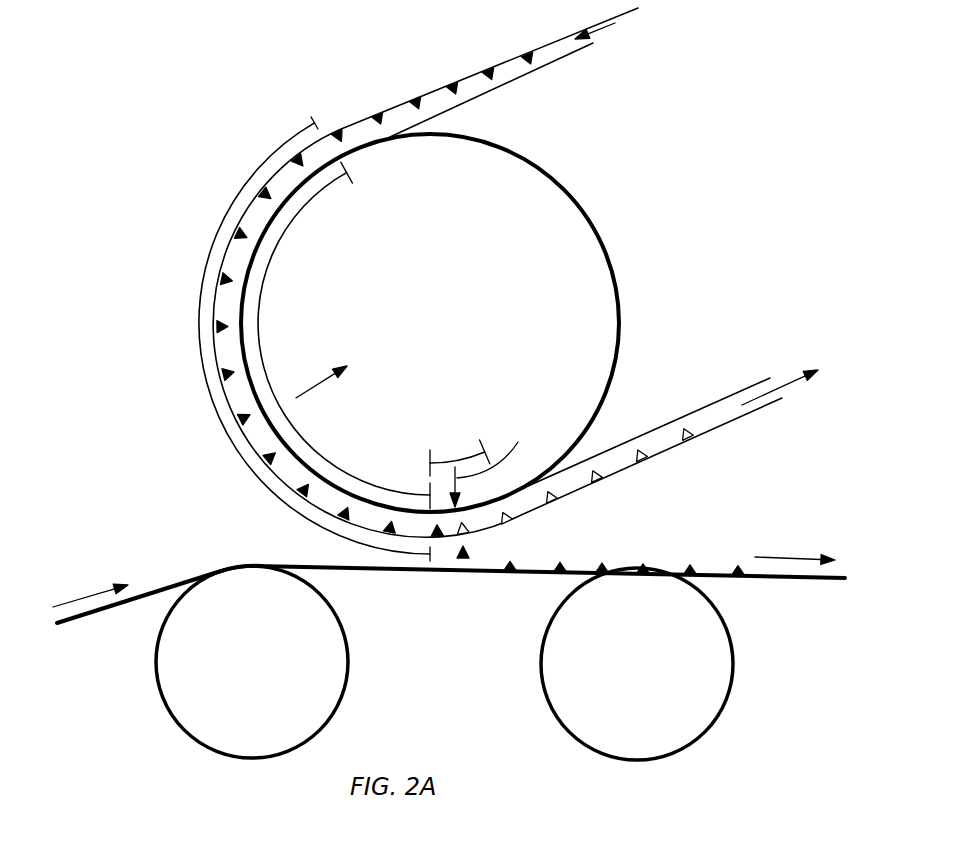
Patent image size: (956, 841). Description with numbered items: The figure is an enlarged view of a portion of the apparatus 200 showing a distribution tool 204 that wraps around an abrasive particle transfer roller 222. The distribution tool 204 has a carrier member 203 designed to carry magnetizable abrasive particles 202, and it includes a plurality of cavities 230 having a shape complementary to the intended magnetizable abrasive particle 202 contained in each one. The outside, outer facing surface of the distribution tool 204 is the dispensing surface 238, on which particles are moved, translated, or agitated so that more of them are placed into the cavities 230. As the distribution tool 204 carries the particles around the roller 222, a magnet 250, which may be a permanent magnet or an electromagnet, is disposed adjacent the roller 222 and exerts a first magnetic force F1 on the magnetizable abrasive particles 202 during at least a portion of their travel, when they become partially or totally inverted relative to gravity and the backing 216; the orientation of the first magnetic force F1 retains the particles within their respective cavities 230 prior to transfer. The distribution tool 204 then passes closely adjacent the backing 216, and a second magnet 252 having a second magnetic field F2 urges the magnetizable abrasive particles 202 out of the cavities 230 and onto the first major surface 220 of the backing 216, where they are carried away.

The apparatus 200 is at (178, 93).
The magnetizable abrasive particle 202 is at (688, 566).
The carrier member 203 is at (510, 68).
The distribution tool 204 is at (211, 248).
The backing 216 is at (167, 585).
The first major surface 220 is at (537, 564).
The abrasive particle transfer roller 222 is at (610, 256).
The cavities 230 is at (690, 437).
The dispensing surface 238 is at (393, 106).
The magnet 250 is at (262, 292).
The second magnet 252 is at (462, 457).
The first magnetic force F1 is at (205, 426).
The second magnetic field F2 is at (498, 462).